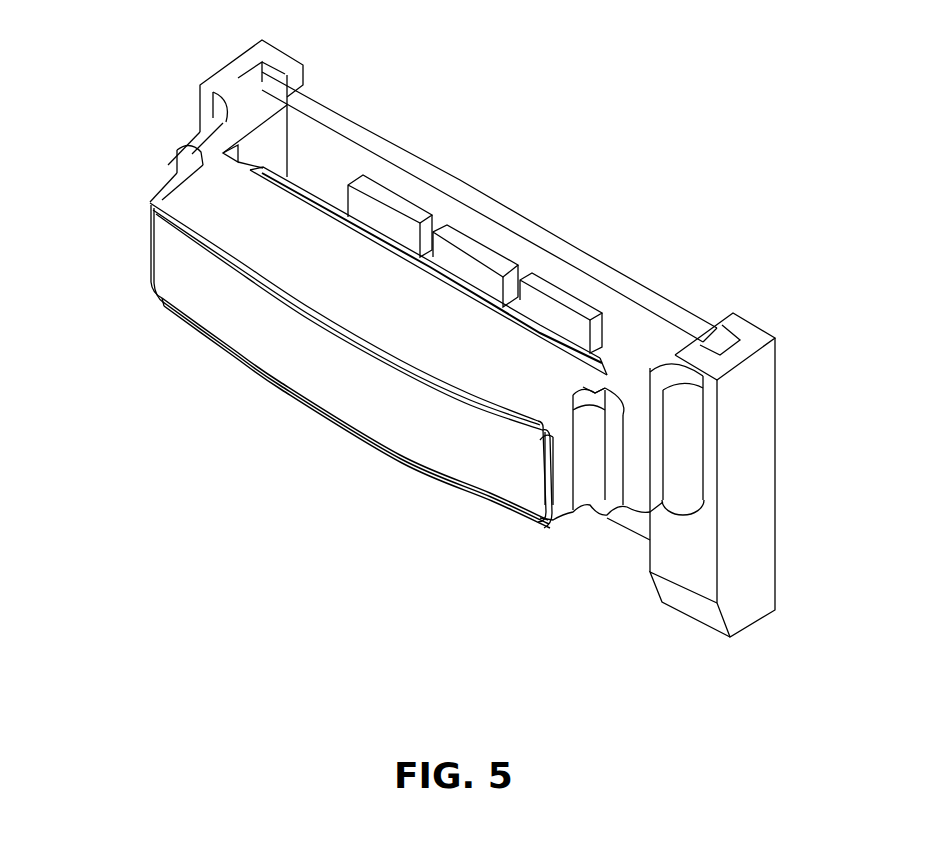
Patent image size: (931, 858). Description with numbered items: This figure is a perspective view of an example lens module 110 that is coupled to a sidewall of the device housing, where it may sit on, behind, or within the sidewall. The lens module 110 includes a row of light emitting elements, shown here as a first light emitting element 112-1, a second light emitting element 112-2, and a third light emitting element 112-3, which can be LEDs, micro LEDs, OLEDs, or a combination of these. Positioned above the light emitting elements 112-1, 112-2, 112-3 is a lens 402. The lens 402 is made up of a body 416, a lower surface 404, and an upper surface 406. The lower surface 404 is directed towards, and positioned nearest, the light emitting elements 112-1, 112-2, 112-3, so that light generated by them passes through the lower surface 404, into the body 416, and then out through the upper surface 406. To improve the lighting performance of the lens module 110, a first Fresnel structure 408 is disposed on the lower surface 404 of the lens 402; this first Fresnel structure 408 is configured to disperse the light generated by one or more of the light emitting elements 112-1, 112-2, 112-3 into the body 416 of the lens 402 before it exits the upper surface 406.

The lens module 110 is at (688, 76).
The lens 402 is at (197, 202).
The lower surface 404 is at (253, 163).
The upper surface 406 is at (203, 303).
The first Fresnel structure 408 is at (577, 362).
The body 416 is at (470, 357).
The first light emitting element 112-1 is at (468, 270).
The second light emitting element 112-2 is at (395, 216).
The third light emitting element 112-3 is at (557, 317).